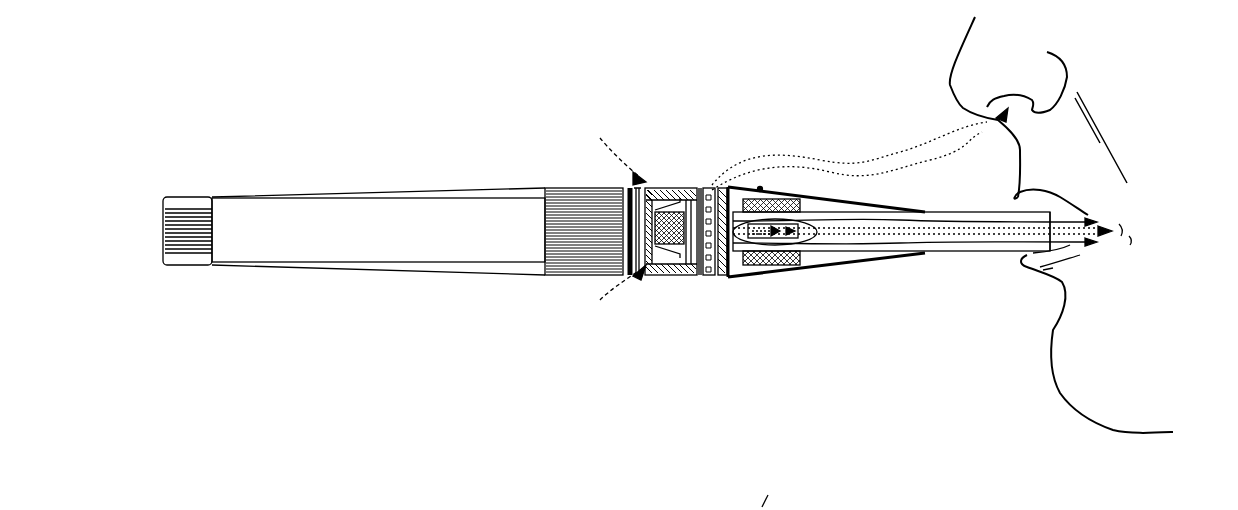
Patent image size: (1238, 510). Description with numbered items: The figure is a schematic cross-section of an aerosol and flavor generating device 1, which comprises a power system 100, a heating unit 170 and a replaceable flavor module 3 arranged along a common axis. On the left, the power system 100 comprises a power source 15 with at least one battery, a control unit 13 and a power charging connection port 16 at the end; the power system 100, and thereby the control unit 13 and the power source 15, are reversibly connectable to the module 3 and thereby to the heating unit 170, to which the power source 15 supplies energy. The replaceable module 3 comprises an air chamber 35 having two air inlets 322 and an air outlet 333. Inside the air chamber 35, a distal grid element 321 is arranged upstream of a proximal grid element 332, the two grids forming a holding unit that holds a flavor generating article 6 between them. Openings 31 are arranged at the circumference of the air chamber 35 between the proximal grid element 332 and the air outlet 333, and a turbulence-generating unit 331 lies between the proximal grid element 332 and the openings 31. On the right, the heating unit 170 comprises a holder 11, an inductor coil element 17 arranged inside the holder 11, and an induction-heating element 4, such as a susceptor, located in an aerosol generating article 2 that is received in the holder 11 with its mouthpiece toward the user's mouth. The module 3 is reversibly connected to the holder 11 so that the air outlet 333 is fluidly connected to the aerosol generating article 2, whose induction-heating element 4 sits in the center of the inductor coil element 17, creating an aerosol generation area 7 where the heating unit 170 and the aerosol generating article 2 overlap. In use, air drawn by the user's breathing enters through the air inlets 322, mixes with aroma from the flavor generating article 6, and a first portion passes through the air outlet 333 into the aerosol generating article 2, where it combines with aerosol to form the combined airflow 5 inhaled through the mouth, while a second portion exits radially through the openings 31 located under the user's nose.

The power system 100 is at (231, 128).
The aerosol and flavor generating device 1 is at (345, 147).
The power charging connection port 16 is at (190, 222).
The power source 15 is at (437, 215).
The control unit 13 is at (567, 215).
The distal grid element 321 is at (630, 258).
The replaceable flavor module 3 is at (665, 180).
The air inlets 322 is at (648, 185).
The flavor generating article 6 is at (664, 265).
The proximal grid element 332 is at (680, 185).
The openings 31 is at (705, 185).
The turbulence-generating unit 331 is at (703, 276).
The air chamber 35 is at (713, 256).
The air outlet 333 is at (724, 262).
The holder 11 is at (905, 190).
The heating unit 170 is at (760, 190).
The aerosol generating article 2 is at (978, 277).
The combined airflow 5 is at (1000, 237).
The induction-heating element 4 is at (785, 268).
The inductor coil element 17 is at (792, 262).
The aerosol generation area 7 is at (805, 247).